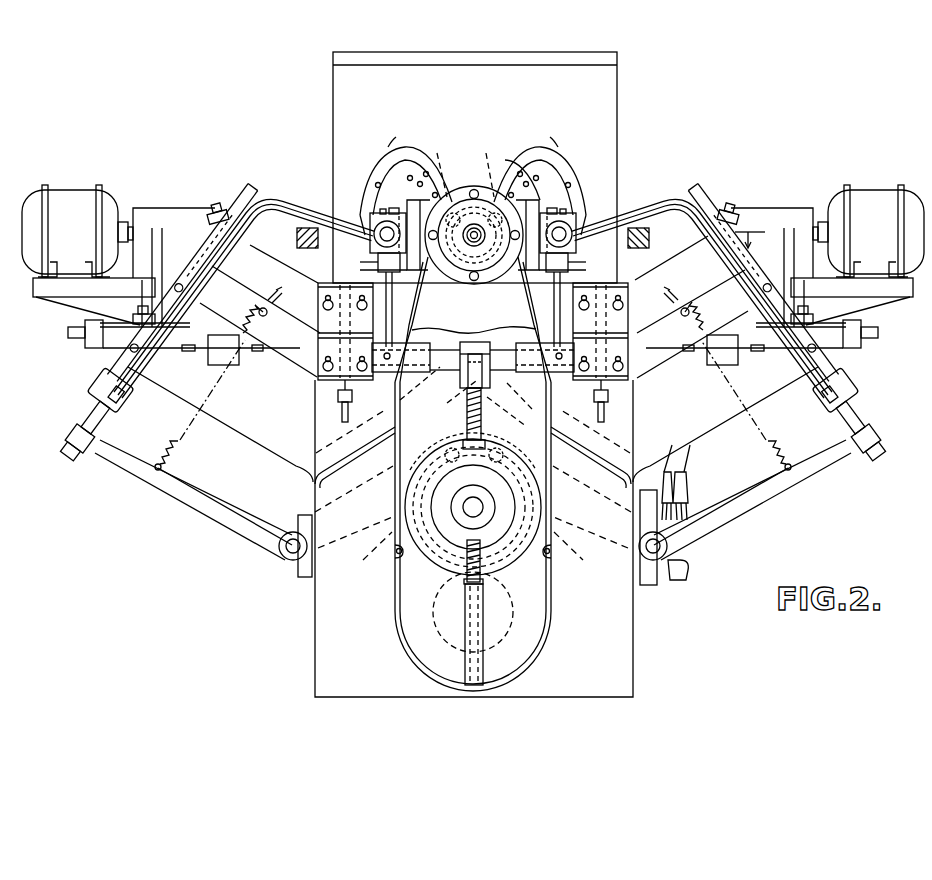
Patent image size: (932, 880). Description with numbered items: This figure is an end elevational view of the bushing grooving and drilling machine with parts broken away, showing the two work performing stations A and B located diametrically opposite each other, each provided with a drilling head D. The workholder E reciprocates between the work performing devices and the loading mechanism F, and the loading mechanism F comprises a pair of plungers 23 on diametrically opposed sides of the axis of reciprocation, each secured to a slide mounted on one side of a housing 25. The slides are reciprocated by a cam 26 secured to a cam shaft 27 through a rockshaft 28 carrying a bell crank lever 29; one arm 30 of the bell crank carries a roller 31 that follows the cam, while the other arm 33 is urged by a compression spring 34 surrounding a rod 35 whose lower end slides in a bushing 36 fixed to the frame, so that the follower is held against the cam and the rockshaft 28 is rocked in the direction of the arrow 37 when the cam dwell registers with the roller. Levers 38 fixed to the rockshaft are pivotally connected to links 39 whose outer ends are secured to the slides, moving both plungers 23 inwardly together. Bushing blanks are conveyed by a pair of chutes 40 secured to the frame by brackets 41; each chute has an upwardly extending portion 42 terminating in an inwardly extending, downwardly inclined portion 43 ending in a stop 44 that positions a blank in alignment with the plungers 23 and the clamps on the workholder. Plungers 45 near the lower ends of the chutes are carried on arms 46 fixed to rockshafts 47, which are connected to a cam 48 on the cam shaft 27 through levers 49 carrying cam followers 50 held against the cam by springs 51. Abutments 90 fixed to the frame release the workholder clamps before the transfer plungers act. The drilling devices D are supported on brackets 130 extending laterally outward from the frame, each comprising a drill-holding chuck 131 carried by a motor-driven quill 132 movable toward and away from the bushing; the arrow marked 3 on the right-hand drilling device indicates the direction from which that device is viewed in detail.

The work performing station A is at (358, 212).
The work performing station B is at (586, 212).
The drilling head D is at (178, 207).
The workholder E is at (494, 183).
The loading mechanism F is at (383, 220).
The section line 3 is at (750, 228).
The plungers 23 is at (388, 222).
The housing 25 is at (470, 186).
The cam 26 is at (510, 543).
The cam shaft 27 is at (470, 510).
The rockshaft 28 is at (491, 362).
The bell crank lever 29 is at (479, 404).
The arm 30 is at (482, 424).
The roller 31 is at (462, 446).
The arm 33 is at (477, 356).
The compression spring 34 is at (487, 622).
The rod 35 is at (460, 578).
The bushing 36 is at (478, 638).
The arrow 37 is at (445, 367).
The levers 38 is at (388, 292).
The links 39 is at (378, 262).
The chutes 40 is at (283, 199).
The brackets 41 is at (291, 343).
The upwardly extending portions 42 is at (210, 268).
The downwardly inclined portions 43 is at (313, 212).
The stops 44 is at (473, 319).
The plungers 45 is at (112, 414).
The arms 46 is at (240, 505).
The rockshafts 47 is at (291, 556).
The cam 48 is at (467, 556).
The levers 49 is at (364, 500).
The cam followers 50 is at (445, 446).
The springs 51 is at (180, 446).
The abutments 90 is at (473, 176).
The brackets 130 is at (266, 428).
The drill-holding chuck 131 is at (306, 248).
The quill 132 is at (275, 250).